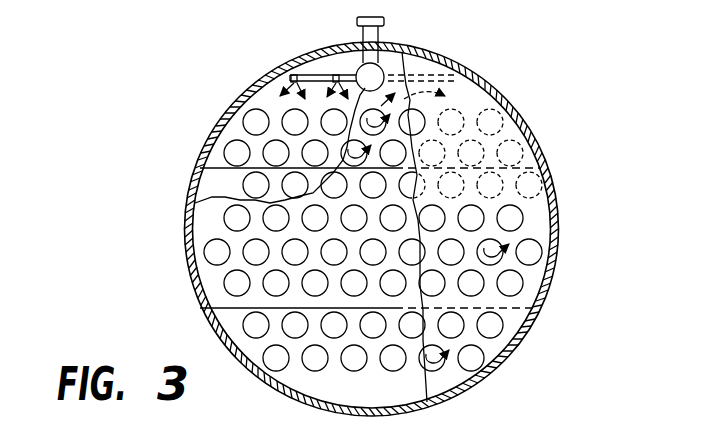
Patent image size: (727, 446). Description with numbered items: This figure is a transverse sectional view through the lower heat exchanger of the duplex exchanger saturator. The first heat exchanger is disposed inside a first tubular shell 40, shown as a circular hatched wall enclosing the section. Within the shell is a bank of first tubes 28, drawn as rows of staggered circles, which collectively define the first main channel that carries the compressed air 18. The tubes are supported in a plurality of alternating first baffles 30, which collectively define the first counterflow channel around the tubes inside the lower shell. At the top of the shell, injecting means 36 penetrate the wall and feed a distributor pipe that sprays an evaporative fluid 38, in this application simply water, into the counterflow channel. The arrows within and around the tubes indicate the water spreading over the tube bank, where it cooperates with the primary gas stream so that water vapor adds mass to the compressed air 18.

The compressed air 18 is at (503, 256).
The first tubes 28 is at (207, 240).
The first baffles 30 is at (194, 285).
The injecting means 36 is at (388, 31).
The evaporative fluid 38 is at (287, 90).
The first tubular shell 40 is at (502, 95).